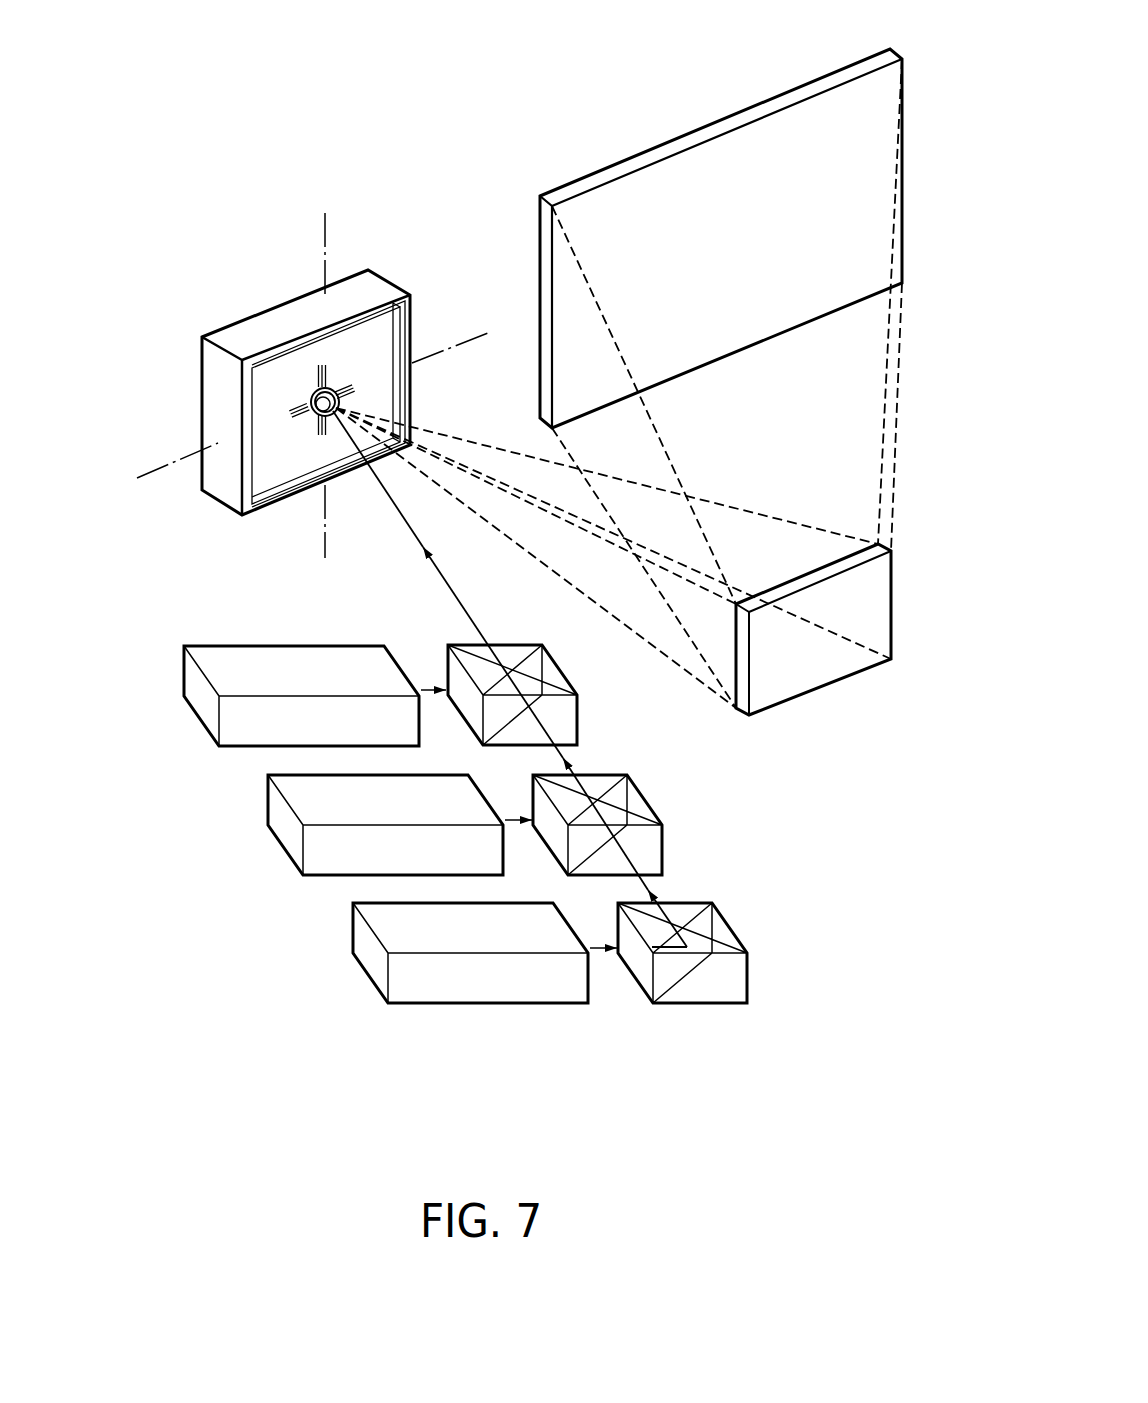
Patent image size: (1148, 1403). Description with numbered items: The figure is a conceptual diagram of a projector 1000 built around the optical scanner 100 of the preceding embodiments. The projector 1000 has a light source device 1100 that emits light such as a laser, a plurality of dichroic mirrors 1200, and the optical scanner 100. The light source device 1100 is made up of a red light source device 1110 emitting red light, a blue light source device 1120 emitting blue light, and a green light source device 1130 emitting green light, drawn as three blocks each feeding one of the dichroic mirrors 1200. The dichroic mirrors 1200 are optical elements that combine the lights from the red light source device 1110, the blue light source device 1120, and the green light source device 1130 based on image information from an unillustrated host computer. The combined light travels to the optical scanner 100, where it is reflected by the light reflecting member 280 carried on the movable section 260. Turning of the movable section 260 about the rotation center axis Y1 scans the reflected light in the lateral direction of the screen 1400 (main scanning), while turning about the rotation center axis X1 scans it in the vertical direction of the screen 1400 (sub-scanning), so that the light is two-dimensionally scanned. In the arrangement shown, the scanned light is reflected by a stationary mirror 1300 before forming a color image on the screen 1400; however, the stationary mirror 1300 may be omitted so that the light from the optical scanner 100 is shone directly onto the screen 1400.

The projector 1000 is at (186, 231).
The optical scanner 100 is at (196, 382).
The movable section 260 is at (312, 394).
The light reflecting member 280 is at (338, 387).
The screen 1400 is at (824, 83).
The stationary mirror 1300 is at (829, 668).
The dichroic mirrors 1200 is at (560, 670).
The light source device 1100 is at (265, 962).
The red light source device 1110 is at (403, 932).
The blue light source device 1120 is at (317, 802).
The green light source device 1130 is at (233, 673).